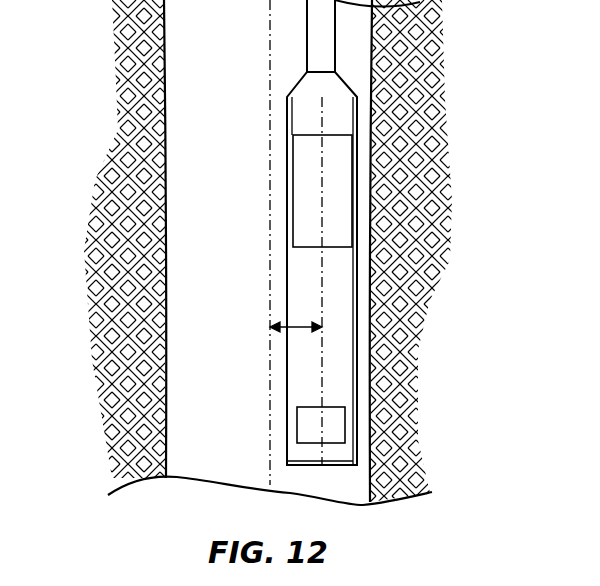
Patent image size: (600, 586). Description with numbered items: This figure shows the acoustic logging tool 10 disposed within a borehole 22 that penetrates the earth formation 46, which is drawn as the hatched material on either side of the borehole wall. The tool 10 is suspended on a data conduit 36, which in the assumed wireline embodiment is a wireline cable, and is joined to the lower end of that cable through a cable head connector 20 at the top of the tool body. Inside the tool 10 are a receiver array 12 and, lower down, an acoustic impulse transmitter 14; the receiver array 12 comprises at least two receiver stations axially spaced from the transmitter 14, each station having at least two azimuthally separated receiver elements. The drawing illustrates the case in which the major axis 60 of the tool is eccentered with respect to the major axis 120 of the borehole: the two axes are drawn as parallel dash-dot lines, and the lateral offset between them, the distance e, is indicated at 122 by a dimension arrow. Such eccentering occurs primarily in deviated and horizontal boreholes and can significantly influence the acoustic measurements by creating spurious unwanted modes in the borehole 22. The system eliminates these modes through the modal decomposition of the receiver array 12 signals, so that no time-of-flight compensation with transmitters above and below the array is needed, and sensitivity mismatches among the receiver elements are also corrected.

The tool 10 is at (343, 250).
The receiver array 12 is at (352, 163).
The acoustic impulse transmitter 14 is at (308, 407).
The cable head connector 20 is at (297, 84).
The borehole 22 is at (193, 193).
The data conduit 36 is at (307, 35).
The earth formation 46 is at (140, 253).
The major axis of the tool 60 is at (322, 113).
The major axis of the borehole 120 is at (270, 165).
The eccentricity distance e 122 is at (300, 327).